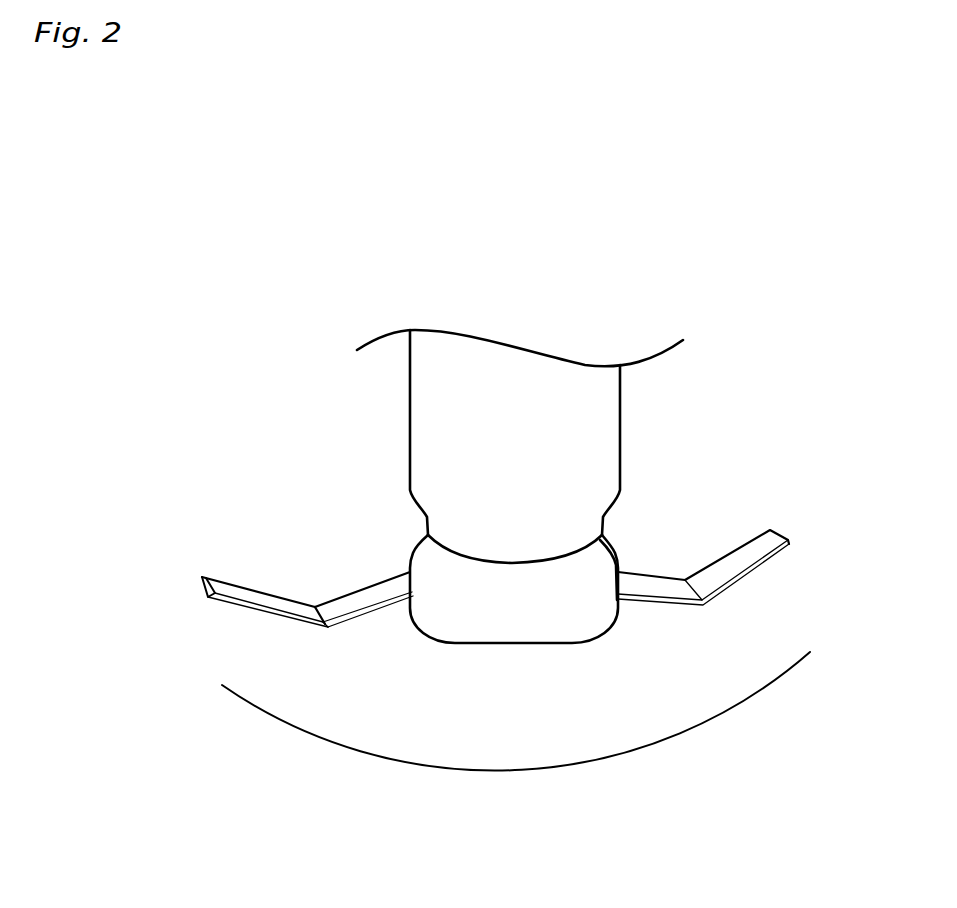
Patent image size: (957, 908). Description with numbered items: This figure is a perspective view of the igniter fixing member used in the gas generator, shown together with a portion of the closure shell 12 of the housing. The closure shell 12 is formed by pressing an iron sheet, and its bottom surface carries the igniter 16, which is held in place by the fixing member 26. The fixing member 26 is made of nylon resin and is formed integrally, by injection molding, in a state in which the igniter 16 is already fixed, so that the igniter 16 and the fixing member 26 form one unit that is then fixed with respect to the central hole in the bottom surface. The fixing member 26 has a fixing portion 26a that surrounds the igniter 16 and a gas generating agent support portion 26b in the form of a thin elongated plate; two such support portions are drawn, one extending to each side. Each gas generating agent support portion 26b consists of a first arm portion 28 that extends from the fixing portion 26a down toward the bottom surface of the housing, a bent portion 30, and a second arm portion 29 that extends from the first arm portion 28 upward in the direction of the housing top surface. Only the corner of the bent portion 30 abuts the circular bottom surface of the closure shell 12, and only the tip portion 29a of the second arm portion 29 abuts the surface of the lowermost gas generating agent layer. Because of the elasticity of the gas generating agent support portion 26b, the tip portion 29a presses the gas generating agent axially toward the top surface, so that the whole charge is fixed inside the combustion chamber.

The igniter 16 is at (503, 388).
The fixing member 26 is at (487, 609).
The fixing portion 26a is at (538, 613).
The gas generating agent support portion 26b is at (704, 606).
The first arm portion 28 is at (360, 610).
The second arm portion 29 is at (260, 612).
The tip portion 29a is at (202, 579).
The bent portion 30 is at (327, 628).
The closure shell 12 is at (488, 748).